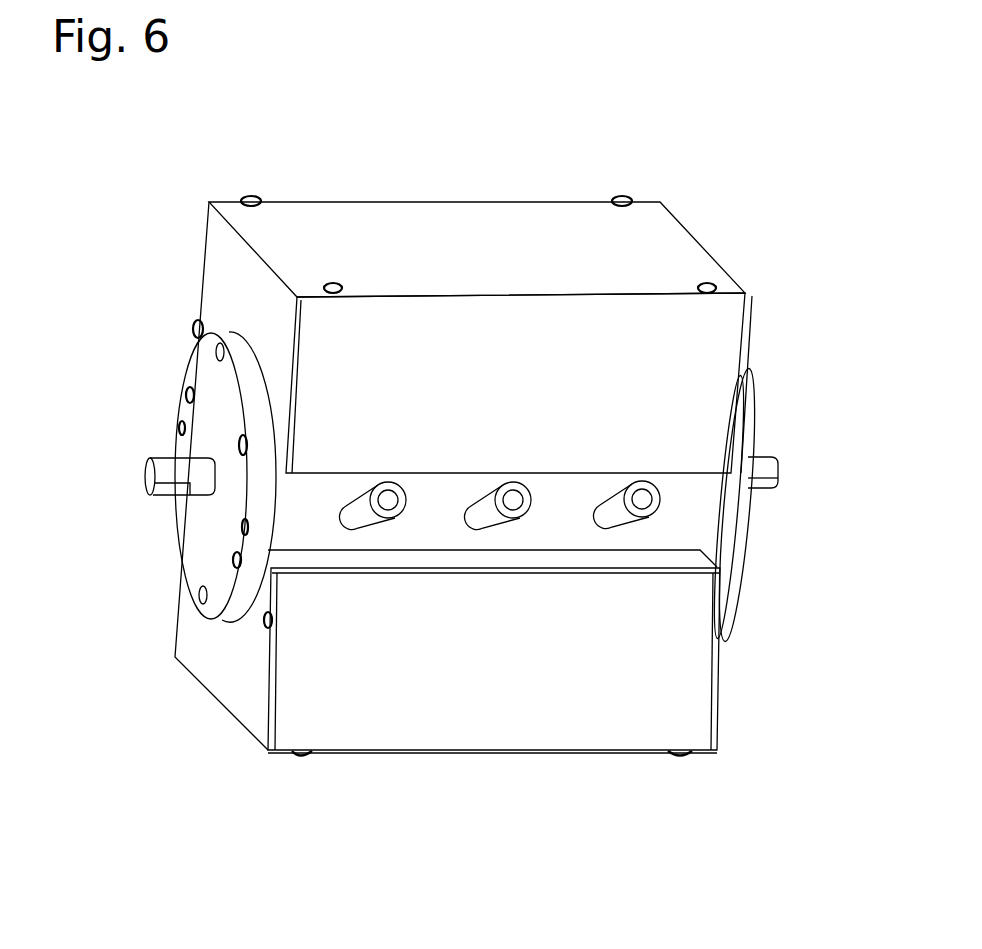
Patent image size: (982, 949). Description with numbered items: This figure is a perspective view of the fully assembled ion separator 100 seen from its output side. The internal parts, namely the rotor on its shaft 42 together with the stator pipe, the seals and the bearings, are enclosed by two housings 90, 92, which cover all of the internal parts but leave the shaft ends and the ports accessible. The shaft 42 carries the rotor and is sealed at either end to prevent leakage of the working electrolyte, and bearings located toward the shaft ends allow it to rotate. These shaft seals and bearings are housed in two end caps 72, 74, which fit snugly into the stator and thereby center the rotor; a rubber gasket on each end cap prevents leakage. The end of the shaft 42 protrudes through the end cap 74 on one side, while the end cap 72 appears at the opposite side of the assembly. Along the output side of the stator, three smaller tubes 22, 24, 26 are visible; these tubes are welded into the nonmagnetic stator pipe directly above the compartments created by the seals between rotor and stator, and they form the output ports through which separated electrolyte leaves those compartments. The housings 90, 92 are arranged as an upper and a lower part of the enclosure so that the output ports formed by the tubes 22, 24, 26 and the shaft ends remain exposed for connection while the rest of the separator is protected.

The ion separator 100 is at (402, 459).
The housing 90 is at (535, 378).
The housing 92 is at (559, 660).
The end cap 74 is at (183, 543).
The end cap 72 is at (780, 504).
The shaft 42 is at (413, 422).
The tube 22 is at (648, 641).
The tube 24 is at (436, 638).
The tube 26 is at (299, 642).